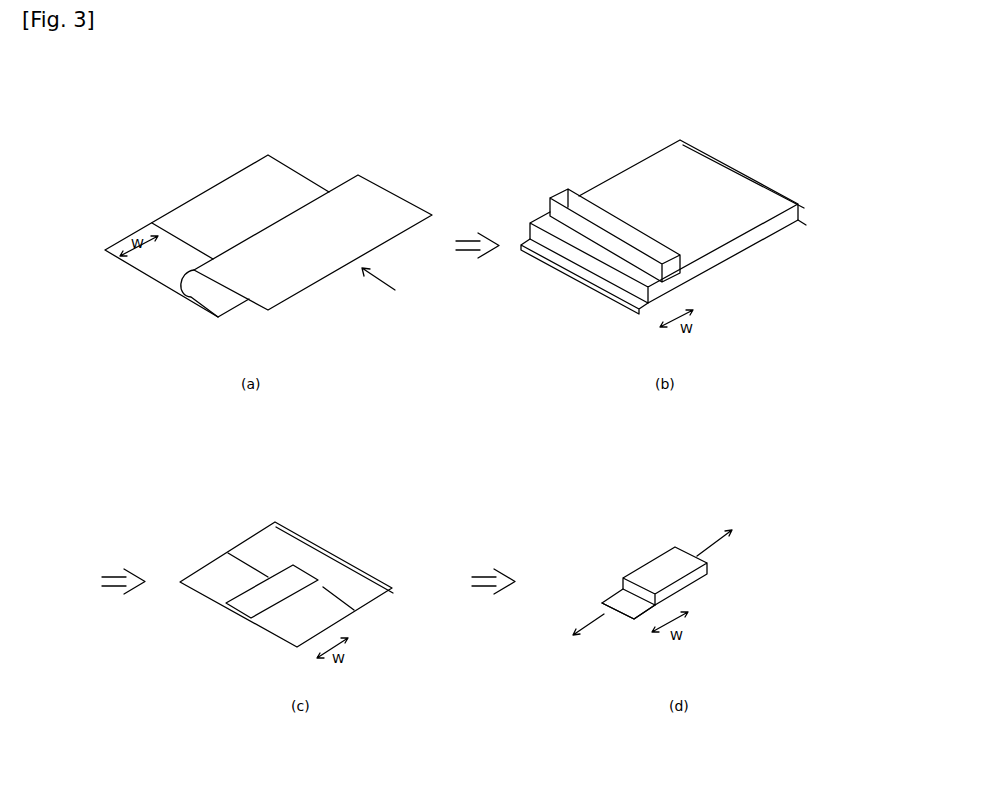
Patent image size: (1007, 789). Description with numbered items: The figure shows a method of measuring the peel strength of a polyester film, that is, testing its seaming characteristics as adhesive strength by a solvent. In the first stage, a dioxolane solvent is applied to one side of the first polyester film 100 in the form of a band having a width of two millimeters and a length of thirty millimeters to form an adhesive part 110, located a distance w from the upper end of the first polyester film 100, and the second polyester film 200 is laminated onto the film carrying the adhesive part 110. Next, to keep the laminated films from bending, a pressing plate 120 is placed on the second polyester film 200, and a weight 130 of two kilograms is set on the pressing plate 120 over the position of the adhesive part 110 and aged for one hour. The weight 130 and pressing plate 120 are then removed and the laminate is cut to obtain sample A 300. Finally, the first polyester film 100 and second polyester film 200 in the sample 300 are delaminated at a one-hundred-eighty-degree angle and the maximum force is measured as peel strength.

The first polyester film 100 is at (207, 191).
The adhesive part 110 is at (152, 223).
The pressing plate 120 is at (612, 285).
The weight 130 is at (560, 193).
The second polyester film 200 is at (373, 184).
The sample A 300 is at (233, 614).